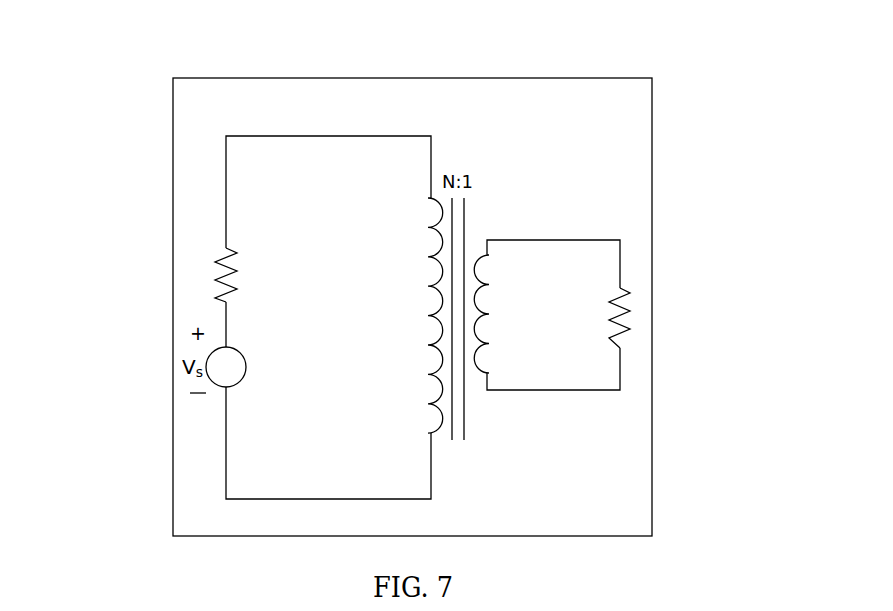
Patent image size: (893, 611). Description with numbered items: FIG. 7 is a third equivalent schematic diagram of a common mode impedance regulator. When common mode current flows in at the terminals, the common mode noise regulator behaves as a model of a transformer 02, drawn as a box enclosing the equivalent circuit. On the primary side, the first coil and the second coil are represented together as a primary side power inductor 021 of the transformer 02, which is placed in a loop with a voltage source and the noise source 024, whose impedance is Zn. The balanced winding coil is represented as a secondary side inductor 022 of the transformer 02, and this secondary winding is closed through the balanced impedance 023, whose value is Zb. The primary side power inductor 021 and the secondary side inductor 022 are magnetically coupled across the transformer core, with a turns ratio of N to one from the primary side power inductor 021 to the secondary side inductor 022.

The transformer 02 is at (598, 78).
The primary side power inductor 021 is at (427, 248).
The secondary side inductor 022 is at (488, 297).
The balanced impedance 023 is at (625, 320).
The noise source 024 is at (217, 270).